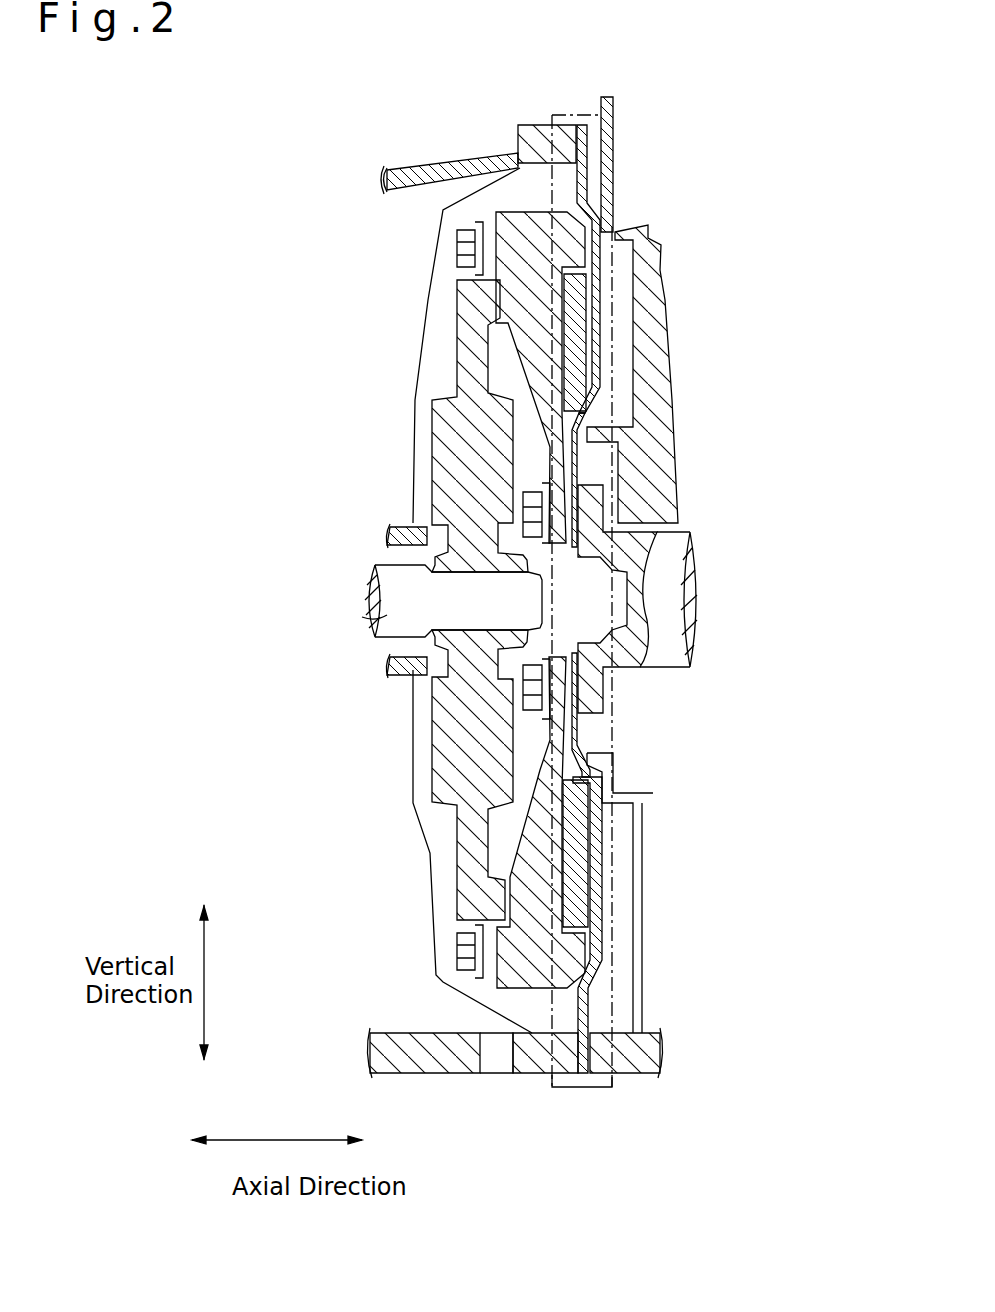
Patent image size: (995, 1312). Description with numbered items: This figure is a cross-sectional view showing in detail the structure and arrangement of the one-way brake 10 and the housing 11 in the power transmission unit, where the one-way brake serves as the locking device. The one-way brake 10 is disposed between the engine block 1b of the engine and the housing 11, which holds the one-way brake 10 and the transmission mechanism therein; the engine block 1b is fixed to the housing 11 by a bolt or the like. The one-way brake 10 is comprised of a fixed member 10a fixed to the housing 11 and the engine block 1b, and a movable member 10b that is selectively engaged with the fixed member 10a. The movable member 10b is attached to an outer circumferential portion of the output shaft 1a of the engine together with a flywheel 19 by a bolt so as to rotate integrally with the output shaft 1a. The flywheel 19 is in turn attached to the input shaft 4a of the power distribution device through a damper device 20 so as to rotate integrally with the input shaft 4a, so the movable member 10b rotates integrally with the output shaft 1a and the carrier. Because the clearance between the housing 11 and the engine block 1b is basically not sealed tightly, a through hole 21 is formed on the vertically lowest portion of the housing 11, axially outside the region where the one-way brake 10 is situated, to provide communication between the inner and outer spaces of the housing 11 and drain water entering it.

The output shaft 1a is at (678, 574).
The engine block 1b is at (603, 142).
The input shaft 4a is at (387, 625).
The one-way brake 10 is at (622, 268).
The fixed member 10a is at (590, 193).
The movable member 10b is at (578, 450).
The housing 11 is at (538, 130).
The flywheel 19 is at (523, 238).
The damper device 20 is at (470, 445).
The through hole 21 is at (495, 1058).